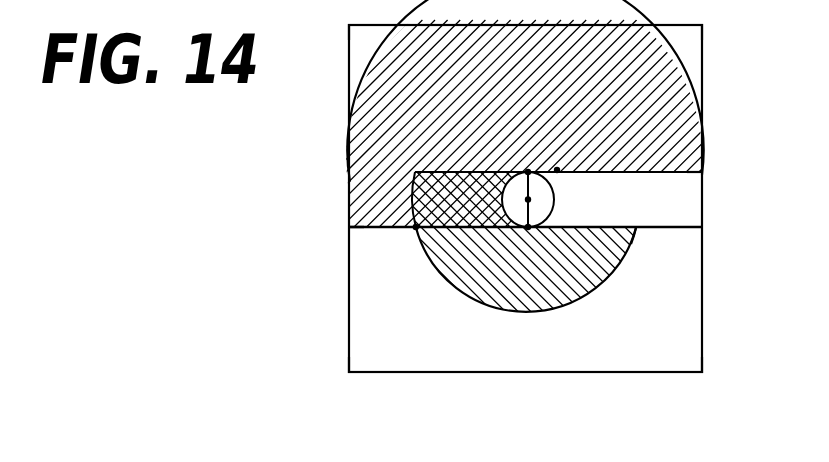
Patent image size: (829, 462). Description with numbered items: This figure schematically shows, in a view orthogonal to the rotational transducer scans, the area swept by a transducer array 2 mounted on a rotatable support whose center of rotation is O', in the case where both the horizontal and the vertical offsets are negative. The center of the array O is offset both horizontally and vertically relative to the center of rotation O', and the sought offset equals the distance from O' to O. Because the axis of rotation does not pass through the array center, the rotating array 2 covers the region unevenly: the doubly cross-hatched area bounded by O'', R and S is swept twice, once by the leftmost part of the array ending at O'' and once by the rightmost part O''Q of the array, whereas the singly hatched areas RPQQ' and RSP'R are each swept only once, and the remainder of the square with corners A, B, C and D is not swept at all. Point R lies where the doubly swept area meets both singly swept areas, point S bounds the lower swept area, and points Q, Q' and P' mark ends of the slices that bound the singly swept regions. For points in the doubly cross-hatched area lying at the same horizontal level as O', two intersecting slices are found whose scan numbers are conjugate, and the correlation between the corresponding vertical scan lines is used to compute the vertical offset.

The transducer array 2 is at (624, 227).
The square corner A is at (339, 372).
The square corner B is at (340, 26).
The square corner C is at (709, 26).
The square corner D is at (708, 373).
The array end point Q is at (712, 170).
The point Q' is at (336, 227).
The point R is at (403, 242).
The point S is at (527, 245).
The center of the array O is at (567, 154).
The center of rotation O' is at (584, 189).
The point O'' is at (523, 155).
The point P' is at (652, 228).